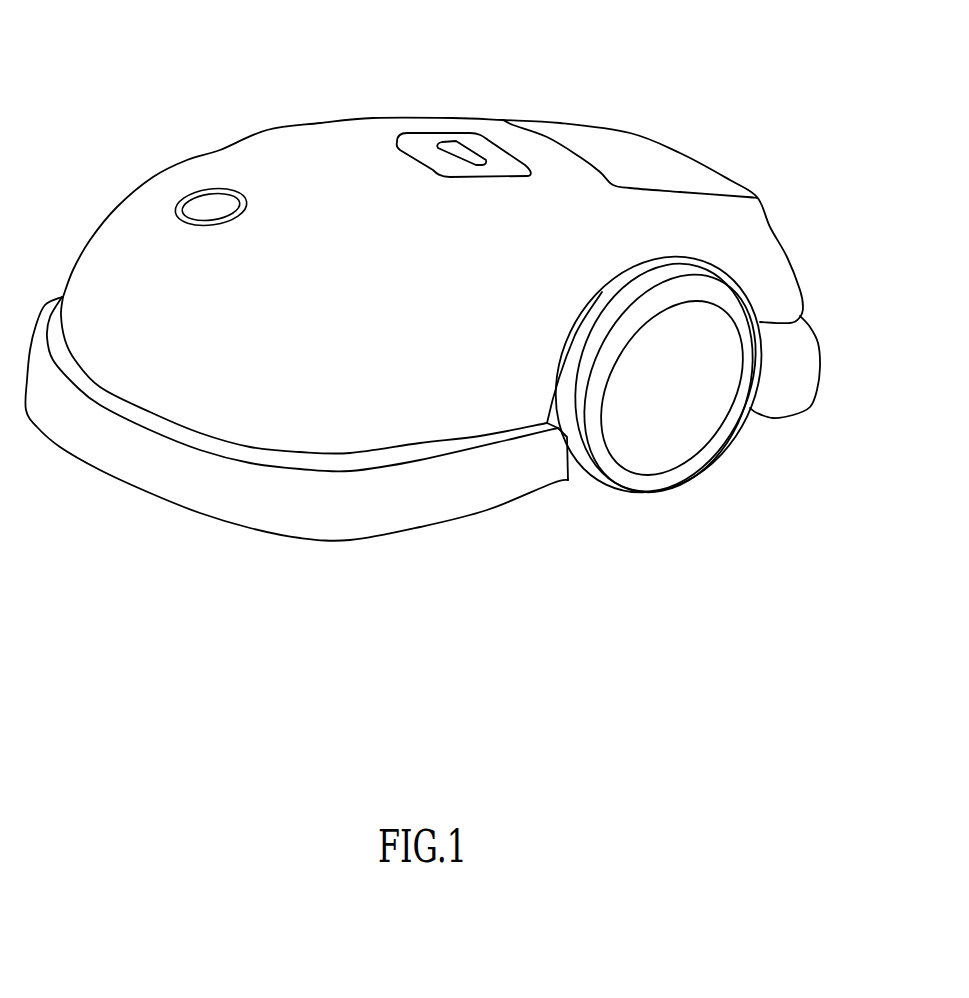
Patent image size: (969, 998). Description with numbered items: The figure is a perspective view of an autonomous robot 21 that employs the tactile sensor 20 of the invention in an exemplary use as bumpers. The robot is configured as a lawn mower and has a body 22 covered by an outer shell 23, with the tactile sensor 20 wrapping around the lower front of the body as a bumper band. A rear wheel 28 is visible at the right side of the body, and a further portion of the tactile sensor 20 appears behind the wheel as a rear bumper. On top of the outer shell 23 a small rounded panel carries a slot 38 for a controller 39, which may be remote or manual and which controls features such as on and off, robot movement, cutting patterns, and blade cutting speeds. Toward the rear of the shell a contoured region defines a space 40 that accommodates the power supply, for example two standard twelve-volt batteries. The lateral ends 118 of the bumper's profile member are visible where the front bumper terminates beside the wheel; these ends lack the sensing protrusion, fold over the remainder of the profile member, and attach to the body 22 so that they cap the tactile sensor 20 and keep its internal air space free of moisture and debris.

The tactile sensor 20 is at (254, 520).
The autonomous robot 21 is at (349, 100).
The body 22 is at (347, 352).
The outer shell 23 is at (217, 140).
The rear wheels 28 is at (733, 435).
The slot 38 is at (428, 147).
The controller 39 is at (492, 141).
The space 40 is at (636, 136).
The lateral ends 118 is at (571, 480).